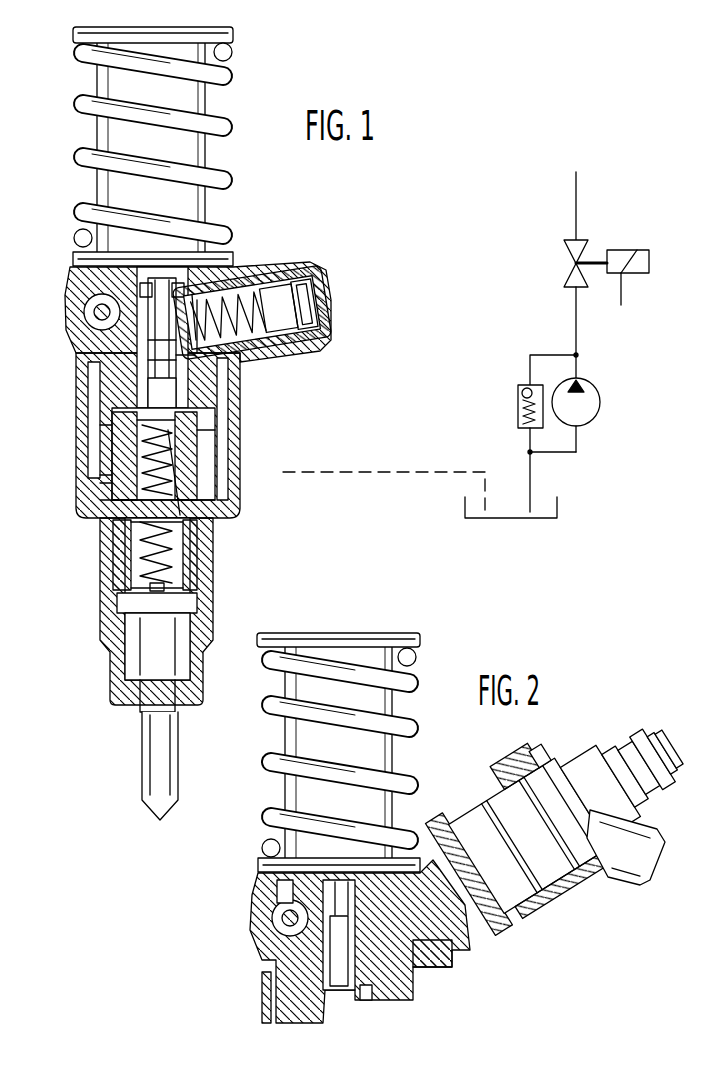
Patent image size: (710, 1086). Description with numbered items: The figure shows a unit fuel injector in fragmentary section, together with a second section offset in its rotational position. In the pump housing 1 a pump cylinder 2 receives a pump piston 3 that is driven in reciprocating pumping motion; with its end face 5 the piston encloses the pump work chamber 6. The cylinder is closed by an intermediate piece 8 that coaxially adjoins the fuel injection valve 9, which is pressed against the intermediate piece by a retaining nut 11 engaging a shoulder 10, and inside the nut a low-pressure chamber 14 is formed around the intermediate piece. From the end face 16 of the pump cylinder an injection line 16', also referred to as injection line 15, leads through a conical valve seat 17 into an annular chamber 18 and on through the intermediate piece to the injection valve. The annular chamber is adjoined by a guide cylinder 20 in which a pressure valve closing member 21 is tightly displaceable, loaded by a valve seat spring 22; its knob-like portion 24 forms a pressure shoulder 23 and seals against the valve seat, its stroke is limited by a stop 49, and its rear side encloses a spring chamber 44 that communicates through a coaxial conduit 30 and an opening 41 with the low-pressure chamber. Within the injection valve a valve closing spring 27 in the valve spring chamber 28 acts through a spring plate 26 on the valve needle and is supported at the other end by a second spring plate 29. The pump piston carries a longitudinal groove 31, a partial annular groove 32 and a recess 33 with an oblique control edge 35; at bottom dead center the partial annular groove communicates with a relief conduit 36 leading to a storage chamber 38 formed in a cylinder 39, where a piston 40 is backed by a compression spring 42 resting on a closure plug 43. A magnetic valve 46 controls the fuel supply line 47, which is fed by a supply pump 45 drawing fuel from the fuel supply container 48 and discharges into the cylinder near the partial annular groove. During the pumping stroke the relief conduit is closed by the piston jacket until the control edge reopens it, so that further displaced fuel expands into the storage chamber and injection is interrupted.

In FIG. 1, the pump housing 1 is at (72, 309).
In FIG. 2, the pump housing 1 is at (300, 1000).
In FIG. 1, the pump cylinder 2 is at (133, 400).
In FIG. 1, the pump piston 3 is at (150, 300).
In FIG. 2, the pump piston 3 is at (285, 900).
In FIG. 1, the end face 5 is at (138, 392).
In FIG. 1, the pump work chamber 6 is at (230, 397).
In FIG. 1, the intermediate piece 8 is at (105, 474).
In FIG. 1, the fuel injection valve 9 is at (115, 593).
In FIG. 1, the shoulder 10 is at (133, 673).
In FIG. 1, the retaining nut 11 is at (110, 637).
In FIG. 1, the low-pressure chamber 14 is at (233, 465).
In FIG. 1, the injection line 15 is at (112, 424).
In FIG. 1, the end face 16 is at (162, 396).
In FIG. 1, the injection line 16' is at (201, 589).
In FIG. 1, the valve seat 17 is at (227, 420).
In FIG. 1, the annular chamber 18 is at (120, 450).
In FIG. 1, the guide cylinder 20 is at (112, 485).
In FIG. 1, the pressure valve closing member 21 is at (215, 452).
In FIG. 1, the valve seat spring 22 is at (210, 497).
In FIG. 1, the pressure shoulder 23 is at (233, 435).
In FIG. 1, the knob-like portion 24 is at (118, 438).
In FIG. 1, the spring plate 26 is at (110, 577).
In FIG. 1, the valve closing spring 27 is at (113, 557).
In FIG. 1, the valve spring chamber 28 is at (190, 563).
In FIG. 1, the spring plate 29 is at (203, 527).
In FIG. 1, the coaxial conduit 30 is at (112, 505).
In FIG. 1, the longitudinal groove 31 is at (168, 338).
In FIG. 2, the longitudinal groove 31 is at (340, 990).
In FIG. 1, the partial annular groove 32 is at (180, 362).
In FIG. 2, the partial annular groove 32 is at (352, 990).
In FIG. 1, the recess 33 is at (160, 312).
In FIG. 2, the recess 33 is at (330, 935).
In FIG. 1, the control edge 35 is at (165, 330).
In FIG. 2, the control edge 35 is at (340, 962).
In FIG. 1, the relief conduit 36 is at (218, 378).
In FIG. 1, the storage chamber 38 is at (240, 282).
In FIG. 1, the cylinder 39 is at (272, 283).
In FIG. 1, the piston 40 is at (263, 352).
In FIG. 1, the opening 41 is at (110, 524).
In FIG. 1, the compression spring 42 is at (307, 343).
In FIG. 1, the closure plug 43 is at (326, 298).
In FIG. 1, the spring chamber 44 is at (217, 474).
In FIG. 1, the supply pump 45 is at (590, 400).
In FIG. 1, the magnetic valve 46 is at (607, 250).
In FIG. 2, the magnetic valve 46 is at (562, 807).
In FIG. 1, the fuel supply line 47 is at (576, 200).
In FIG. 2, the fuel supply line 47 is at (388, 968).
In FIG. 1, the fuel supply container 48 is at (555, 508).
In FIG. 1, the stop 49 is at (205, 512).